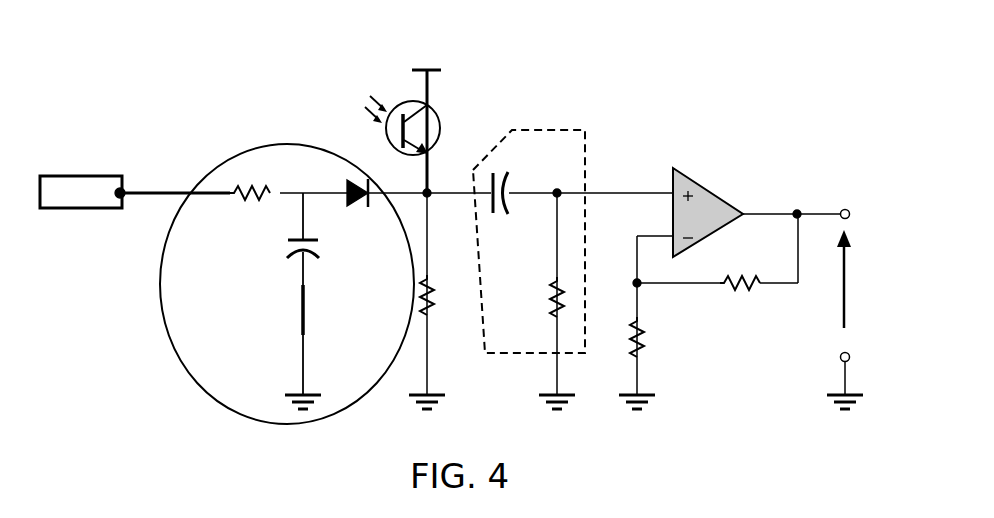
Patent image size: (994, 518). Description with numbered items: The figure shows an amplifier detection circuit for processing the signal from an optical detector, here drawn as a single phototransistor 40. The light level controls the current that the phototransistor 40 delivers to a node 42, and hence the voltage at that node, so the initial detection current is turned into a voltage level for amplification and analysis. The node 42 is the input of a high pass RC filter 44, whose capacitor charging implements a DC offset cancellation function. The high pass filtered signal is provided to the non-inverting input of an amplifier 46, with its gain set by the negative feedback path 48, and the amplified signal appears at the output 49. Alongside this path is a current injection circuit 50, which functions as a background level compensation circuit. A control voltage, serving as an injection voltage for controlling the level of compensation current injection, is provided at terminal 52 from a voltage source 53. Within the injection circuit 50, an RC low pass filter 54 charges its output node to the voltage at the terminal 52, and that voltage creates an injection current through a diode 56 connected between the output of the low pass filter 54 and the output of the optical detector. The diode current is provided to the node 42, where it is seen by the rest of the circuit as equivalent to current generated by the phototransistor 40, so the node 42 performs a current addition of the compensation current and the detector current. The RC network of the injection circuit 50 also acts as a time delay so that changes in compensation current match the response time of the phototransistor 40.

The phototransistor 40 is at (433, 118).
The node 42 is at (449, 174).
The high pass RC filter 44 is at (538, 241).
The amplifier 46 is at (722, 198).
The negative feedback path 48 is at (731, 290).
The output of the amplifier 49 is at (843, 282).
The current injection circuit 50 is at (287, 258).
The control voltage terminal 52 is at (122, 178).
The voltage source 53 is at (62, 208).
The RC low pass filter 54 is at (266, 258).
The diode 56 is at (356, 208).